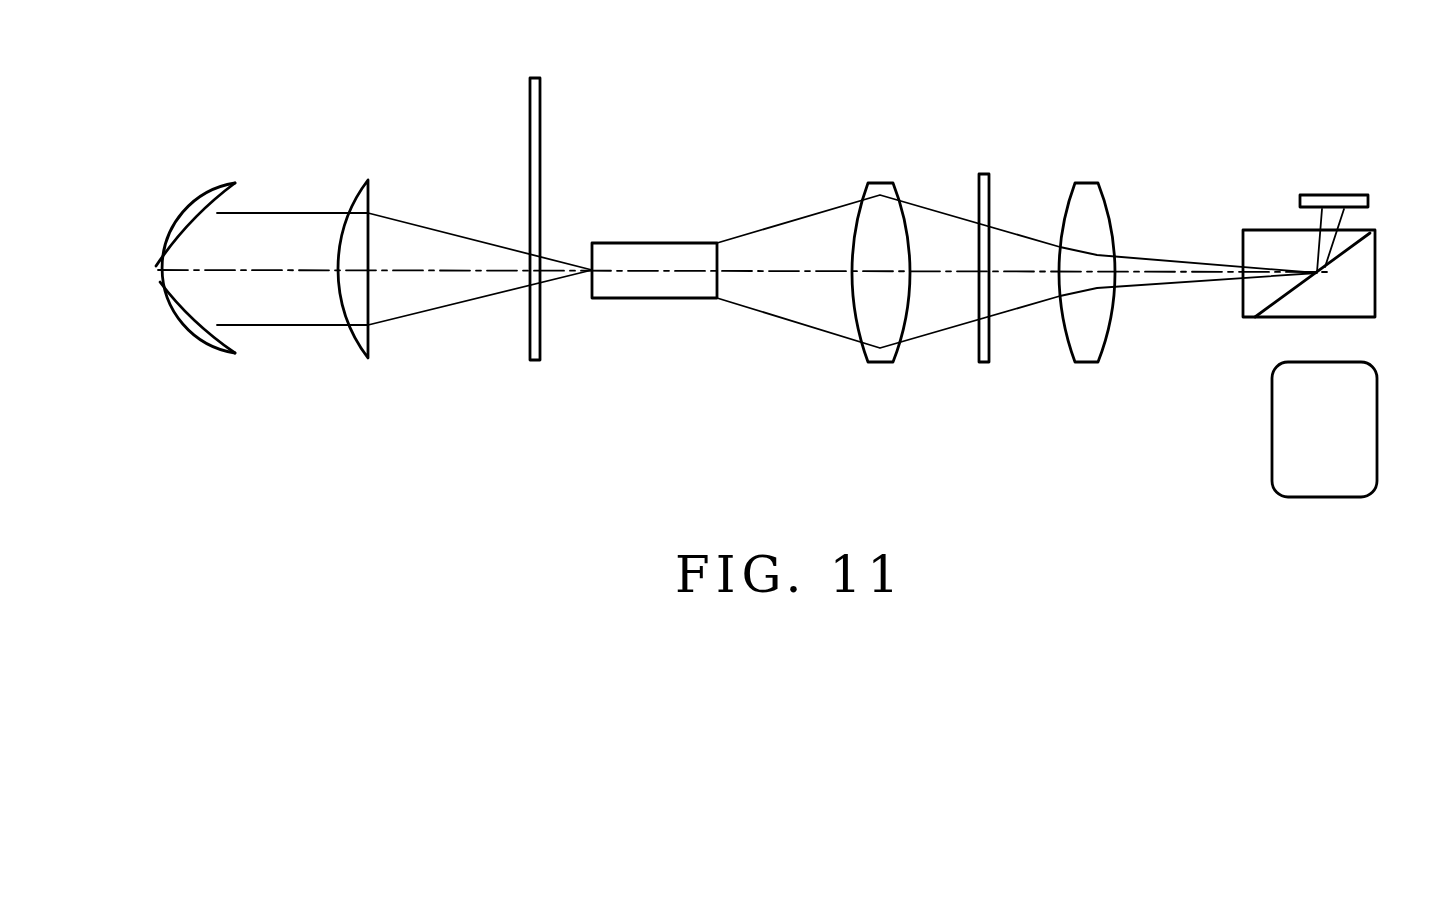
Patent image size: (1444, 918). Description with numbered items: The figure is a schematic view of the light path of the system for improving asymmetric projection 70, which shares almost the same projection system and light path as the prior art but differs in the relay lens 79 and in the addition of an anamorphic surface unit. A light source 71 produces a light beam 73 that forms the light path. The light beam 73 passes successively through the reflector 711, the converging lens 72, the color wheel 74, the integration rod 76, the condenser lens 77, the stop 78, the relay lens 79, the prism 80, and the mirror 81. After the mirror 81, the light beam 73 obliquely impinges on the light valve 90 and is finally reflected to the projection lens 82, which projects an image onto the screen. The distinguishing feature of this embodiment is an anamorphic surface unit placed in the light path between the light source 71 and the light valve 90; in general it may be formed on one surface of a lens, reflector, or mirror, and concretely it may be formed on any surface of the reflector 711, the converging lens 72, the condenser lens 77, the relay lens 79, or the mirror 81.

The system for improving asymmetric projection 70 is at (428, 396).
The light source 71 is at (180, 194).
The reflector 711 is at (220, 196).
The converging lens 72 is at (352, 188).
The light beam 73 is at (446, 229).
The color wheel 74 is at (540, 342).
The integration rod 76 is at (655, 243).
The condenser lens 77 is at (880, 188).
The stop 78 is at (984, 174).
The relay lens 79 is at (1088, 188).
The prism 80 is at (1364, 303).
The mirror 81 is at (1358, 243).
The projection lens 82 is at (1327, 487).
The light valve 90 is at (1336, 198).